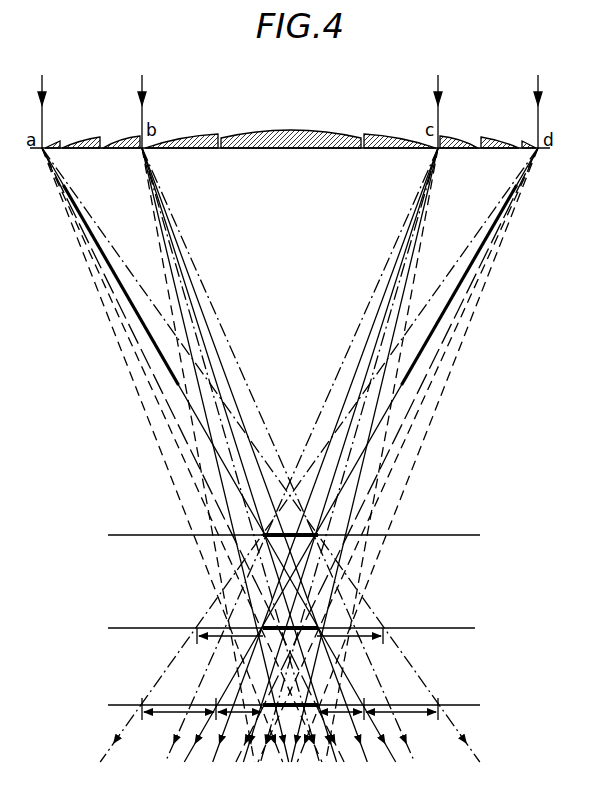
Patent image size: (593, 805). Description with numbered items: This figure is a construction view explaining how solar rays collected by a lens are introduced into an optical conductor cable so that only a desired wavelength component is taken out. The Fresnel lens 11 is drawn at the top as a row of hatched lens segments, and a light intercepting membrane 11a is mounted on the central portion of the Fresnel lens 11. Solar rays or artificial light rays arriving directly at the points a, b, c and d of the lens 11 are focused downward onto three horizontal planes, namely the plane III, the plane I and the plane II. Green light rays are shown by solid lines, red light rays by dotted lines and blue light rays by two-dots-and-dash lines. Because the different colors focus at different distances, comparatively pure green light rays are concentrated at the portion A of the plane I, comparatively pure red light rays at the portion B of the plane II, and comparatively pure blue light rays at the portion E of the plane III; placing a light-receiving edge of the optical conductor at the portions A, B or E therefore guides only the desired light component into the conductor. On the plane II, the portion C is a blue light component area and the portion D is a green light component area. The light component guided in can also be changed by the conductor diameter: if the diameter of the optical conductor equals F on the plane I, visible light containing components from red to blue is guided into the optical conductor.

The Fresnel lens 11 is at (273, 160).
The light intercepting membrane 11a is at (318, 131).
The plane I is at (300, 629).
The plane II is at (304, 706).
The plane III is at (308, 536).
The portion A is at (318, 622).
The portion B is at (320, 708).
The portion C is at (176, 700).
The portion D is at (238, 700).
The portion E is at (352, 564).
The diameter F is at (212, 638).